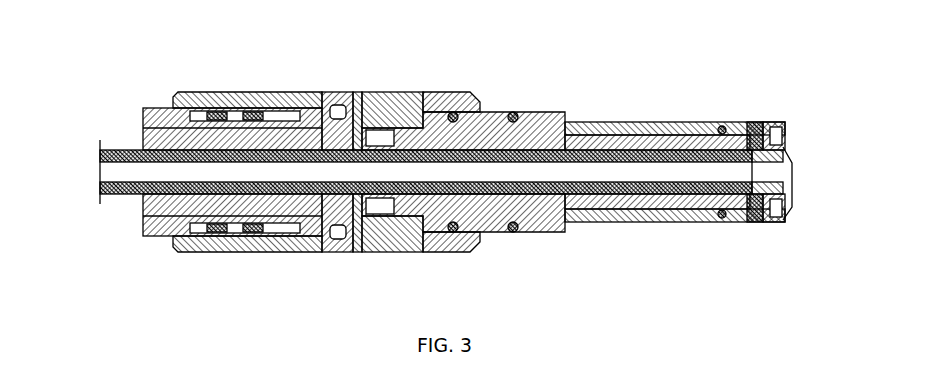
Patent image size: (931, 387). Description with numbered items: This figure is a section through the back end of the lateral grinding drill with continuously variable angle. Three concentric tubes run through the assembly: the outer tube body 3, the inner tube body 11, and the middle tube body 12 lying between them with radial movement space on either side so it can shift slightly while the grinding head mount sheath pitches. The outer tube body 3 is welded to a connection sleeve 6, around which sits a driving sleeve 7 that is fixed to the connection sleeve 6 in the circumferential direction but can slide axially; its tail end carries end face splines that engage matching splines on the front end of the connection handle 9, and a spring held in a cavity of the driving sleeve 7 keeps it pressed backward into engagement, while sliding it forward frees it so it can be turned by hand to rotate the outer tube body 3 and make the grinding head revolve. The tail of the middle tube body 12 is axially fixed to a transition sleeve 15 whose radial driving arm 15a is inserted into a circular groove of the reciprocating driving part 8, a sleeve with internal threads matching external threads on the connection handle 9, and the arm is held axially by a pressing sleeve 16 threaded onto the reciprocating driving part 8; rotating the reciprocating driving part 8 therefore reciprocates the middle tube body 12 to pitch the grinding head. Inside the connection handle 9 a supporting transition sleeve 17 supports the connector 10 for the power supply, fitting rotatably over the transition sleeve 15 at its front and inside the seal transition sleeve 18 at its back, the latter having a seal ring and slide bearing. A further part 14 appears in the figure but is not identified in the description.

The outer tube body 3 is at (130, 194).
The connection sleeve 6 is at (158, 108).
The driving sleeve 7 is at (217, 105).
The reciprocating driving part 8 is at (430, 94).
The connection handle 9 is at (503, 112).
The connector 10 is at (767, 122).
The inner tube body 11 is at (372, 252).
The middle tube body 12 is at (267, 252).
The groove 14 is at (236, 98).
The transition sleeve 15 is at (318, 140).
The radial driving arm 15a is at (381, 97).
The pressing sleeve 16 is at (353, 95).
The supporting transition sleeve 17 is at (570, 122).
The seal transition sleeve 18 is at (698, 122).